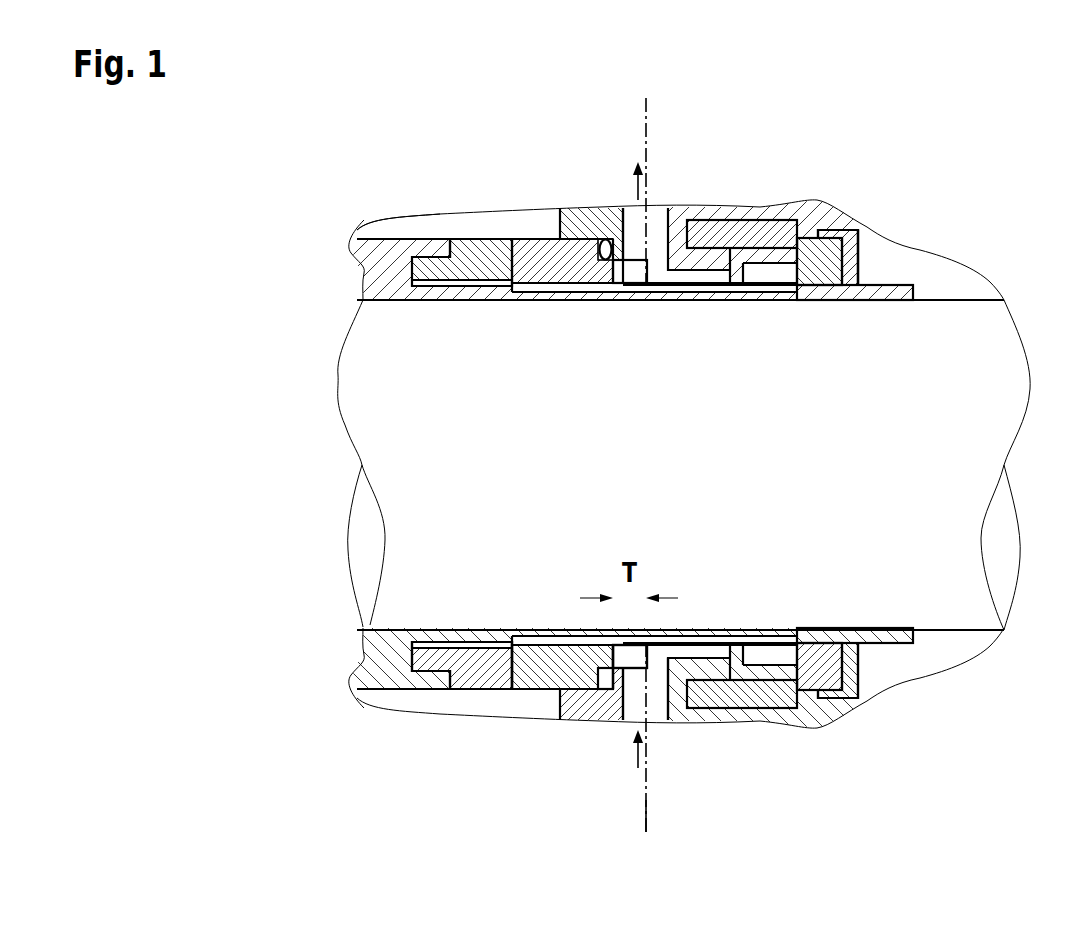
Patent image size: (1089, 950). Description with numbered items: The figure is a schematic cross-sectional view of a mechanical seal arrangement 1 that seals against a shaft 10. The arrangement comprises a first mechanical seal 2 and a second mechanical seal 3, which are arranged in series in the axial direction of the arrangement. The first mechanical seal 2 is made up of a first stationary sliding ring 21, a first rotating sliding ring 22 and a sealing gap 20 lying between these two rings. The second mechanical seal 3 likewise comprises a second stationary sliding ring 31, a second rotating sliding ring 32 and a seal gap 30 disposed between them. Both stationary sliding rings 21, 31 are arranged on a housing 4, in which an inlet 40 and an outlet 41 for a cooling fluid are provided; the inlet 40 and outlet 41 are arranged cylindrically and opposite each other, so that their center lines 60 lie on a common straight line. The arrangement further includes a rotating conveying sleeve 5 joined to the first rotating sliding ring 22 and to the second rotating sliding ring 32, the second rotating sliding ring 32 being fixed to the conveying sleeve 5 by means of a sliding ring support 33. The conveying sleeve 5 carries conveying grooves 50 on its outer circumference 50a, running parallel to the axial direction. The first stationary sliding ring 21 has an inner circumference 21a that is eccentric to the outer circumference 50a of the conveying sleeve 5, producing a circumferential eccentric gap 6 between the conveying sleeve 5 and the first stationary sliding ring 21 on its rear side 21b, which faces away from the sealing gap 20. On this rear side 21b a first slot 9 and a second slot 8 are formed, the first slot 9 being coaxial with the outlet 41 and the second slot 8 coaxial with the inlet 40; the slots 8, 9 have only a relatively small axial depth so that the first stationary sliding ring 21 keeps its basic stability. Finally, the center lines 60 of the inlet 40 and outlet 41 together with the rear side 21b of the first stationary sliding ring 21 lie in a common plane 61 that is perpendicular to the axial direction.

The mechanical seal arrangement 1 is at (297, 207).
The first mechanical seal 2 is at (470, 216).
The second mechanical seal 3 is at (796, 200).
The housing 4 is at (737, 214).
The conveying sleeve 5 is at (885, 294).
The eccentric gap 6 is at (495, 650).
The second slot 8 is at (635, 662).
The first slot 9 is at (590, 234).
The shaft 10 is at (952, 560).
The sealing gap 20 is at (503, 253).
The first stationary sliding ring 21 is at (545, 262).
The inner circumference 21a is at (537, 622).
The rear side 21b is at (652, 277).
The first rotating sliding ring 22 is at (458, 252).
The seal gap 30 is at (807, 247).
The second stationary sliding ring 31 is at (764, 238).
The second rotating sliding ring 32 is at (827, 250).
The sliding ring support 33 is at (850, 257).
The inlet 40 is at (630, 660).
The outlet 41 is at (632, 267).
The conveying grooves 50 is at (557, 290).
The outer circumference 50a is at (560, 648).
The center lines 60 is at (650, 117).
The common plane 61 is at (638, 814).